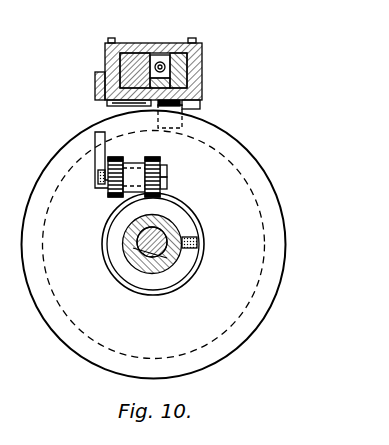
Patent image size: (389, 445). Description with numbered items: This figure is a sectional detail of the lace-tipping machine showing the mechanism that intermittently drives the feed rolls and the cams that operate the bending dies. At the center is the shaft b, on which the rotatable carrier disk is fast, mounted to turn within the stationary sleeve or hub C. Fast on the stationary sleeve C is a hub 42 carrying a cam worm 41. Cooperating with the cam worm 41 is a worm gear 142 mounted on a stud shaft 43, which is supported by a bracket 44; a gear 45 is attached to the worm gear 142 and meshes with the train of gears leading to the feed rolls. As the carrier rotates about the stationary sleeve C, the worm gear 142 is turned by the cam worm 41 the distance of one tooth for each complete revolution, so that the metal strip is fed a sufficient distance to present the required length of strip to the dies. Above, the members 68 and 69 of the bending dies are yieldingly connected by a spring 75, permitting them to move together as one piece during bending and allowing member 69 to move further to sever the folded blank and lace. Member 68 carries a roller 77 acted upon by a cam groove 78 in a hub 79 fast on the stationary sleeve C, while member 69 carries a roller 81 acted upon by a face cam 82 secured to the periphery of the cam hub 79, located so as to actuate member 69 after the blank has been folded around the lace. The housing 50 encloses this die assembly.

The cam worm 41 is at (199, 232).
The hub 42 is at (185, 262).
The stud shaft 43 is at (167, 182).
The bracket 44 is at (97, 136).
The gear 45 is at (112, 197).
The motor housing 50 is at (202, 70).
The member of the bending dies 68 is at (127, 56).
The member of the bending dies 69 is at (155, 62).
The spring 75 is at (150, 73).
The roller 77 is at (200, 106).
The cam groove 78 is at (258, 205).
The hub 79 is at (285, 242).
The roller 81 is at (110, 105).
The face cam 82 is at (200, 105).
The worm gear 142 is at (158, 165).
The shaft b is at (138, 250).
The stationary sleeve or hub C is at (135, 262).